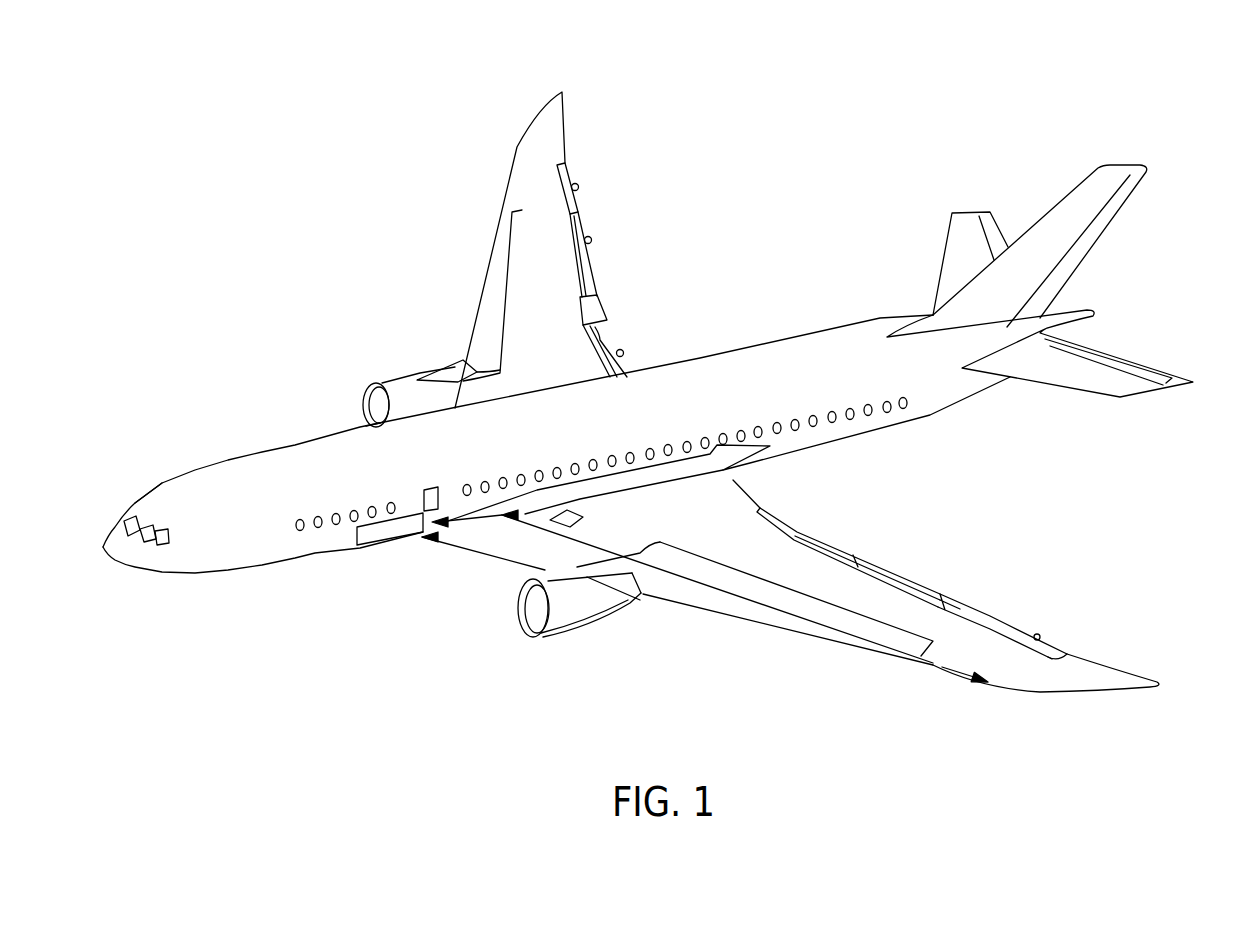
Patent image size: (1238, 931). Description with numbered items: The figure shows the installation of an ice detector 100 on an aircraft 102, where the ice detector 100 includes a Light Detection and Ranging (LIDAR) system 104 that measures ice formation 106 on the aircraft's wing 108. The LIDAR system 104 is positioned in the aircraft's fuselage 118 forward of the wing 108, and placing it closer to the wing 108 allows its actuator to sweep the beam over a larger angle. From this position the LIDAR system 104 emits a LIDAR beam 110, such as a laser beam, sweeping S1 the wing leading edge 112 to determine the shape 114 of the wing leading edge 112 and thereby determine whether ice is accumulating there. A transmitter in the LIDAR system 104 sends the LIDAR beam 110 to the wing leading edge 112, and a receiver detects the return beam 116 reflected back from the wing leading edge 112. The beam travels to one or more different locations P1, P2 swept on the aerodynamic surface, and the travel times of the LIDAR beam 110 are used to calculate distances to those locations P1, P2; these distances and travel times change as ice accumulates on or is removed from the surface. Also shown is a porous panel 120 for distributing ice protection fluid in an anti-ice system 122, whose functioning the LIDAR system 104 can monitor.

The ice detector 100 is at (312, 588).
The aircraft 102 is at (408, 283).
The LIDAR system 104 is at (356, 560).
The ice formation 106 is at (568, 513).
The wing 108 is at (940, 603).
The LIDAR beam 110 is at (458, 546).
The wing leading edge 112 is at (740, 592).
The shape 114 is at (999, 652).
The return beam 116 is at (757, 615).
The fuselage 118 is at (298, 414).
The porous panel 120 is at (857, 604).
The anti-ice system 122 is at (883, 620).
The sweeping S1 is at (517, 562).
The location P1 is at (607, 530).
The location P2 is at (965, 656).